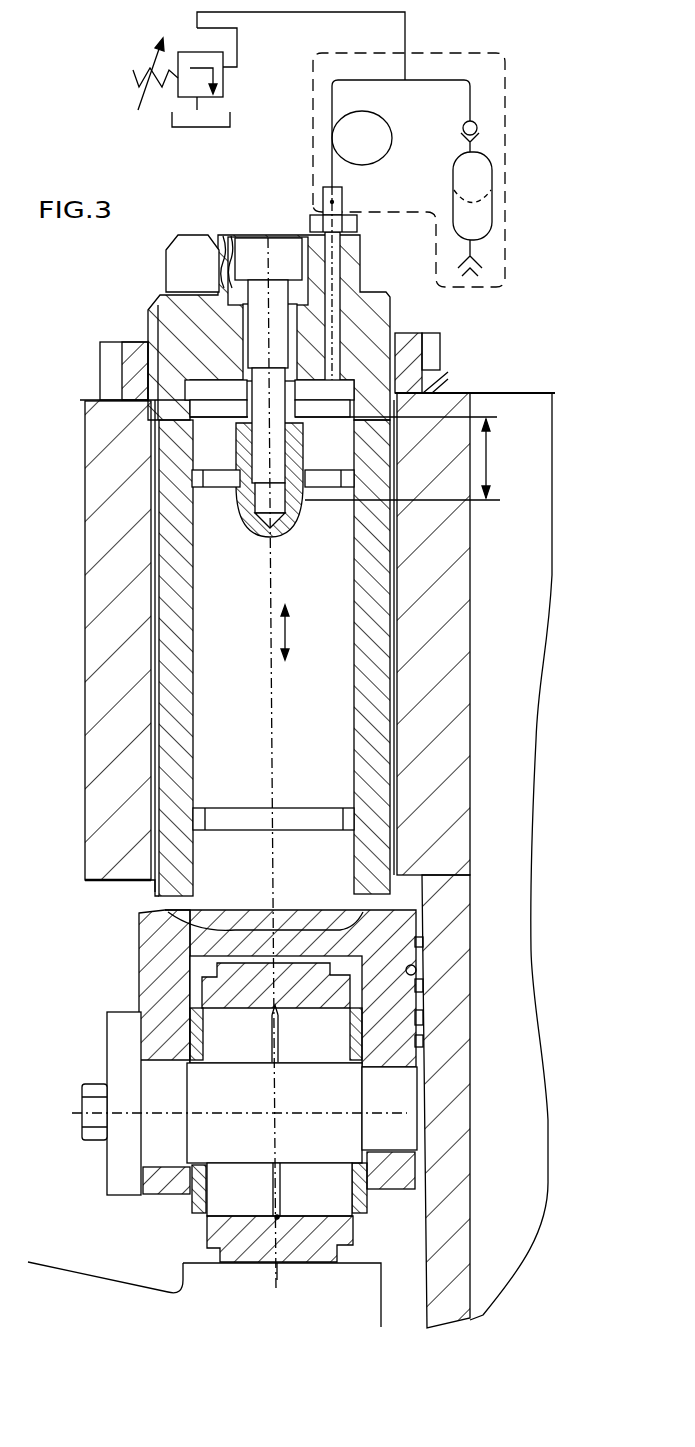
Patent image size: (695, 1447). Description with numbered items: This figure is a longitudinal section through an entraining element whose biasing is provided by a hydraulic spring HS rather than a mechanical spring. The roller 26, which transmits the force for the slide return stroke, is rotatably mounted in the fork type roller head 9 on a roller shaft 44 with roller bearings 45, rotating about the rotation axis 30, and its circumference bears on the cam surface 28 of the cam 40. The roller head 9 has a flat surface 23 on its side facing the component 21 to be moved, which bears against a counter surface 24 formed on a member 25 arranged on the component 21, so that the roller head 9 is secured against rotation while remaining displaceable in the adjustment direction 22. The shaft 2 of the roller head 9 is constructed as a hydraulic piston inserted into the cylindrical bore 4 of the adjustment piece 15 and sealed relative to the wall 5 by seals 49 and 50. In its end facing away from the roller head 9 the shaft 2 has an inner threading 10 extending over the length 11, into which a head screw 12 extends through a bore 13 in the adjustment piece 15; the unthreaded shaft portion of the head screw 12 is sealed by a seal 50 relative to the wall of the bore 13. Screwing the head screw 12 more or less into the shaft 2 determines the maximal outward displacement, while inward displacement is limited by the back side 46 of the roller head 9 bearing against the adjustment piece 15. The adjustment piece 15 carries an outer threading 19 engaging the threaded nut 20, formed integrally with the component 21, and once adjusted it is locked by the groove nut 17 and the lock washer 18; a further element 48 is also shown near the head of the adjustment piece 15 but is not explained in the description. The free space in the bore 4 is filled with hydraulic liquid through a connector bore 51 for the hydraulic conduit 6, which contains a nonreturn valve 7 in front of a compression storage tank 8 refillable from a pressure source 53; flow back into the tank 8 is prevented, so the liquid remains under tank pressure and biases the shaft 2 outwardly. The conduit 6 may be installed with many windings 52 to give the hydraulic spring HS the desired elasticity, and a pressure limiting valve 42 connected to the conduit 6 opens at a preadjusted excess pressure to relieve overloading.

The shaft 2 is at (200, 668).
The cylindrical bore 4 is at (185, 397).
The wall 5 is at (191, 613).
The hydraulic conduit 6 is at (332, 150).
The nonreturn valve 7 is at (473, 121).
The compression storage tank 8 is at (493, 180).
The roller head 9 is at (110, 988).
The inner threading 10 is at (256, 496).
The length 11 is at (490, 458).
The head screw 12 is at (148, 350).
The bore 13 is at (245, 317).
The adjustment piece 15 is at (172, 698).
The groove nut 17 is at (417, 346).
The lock washer 18 is at (444, 378).
The outer threading 19 is at (152, 893).
The threaded nut 20 is at (102, 532).
The component to be moved 21 is at (543, 530).
The adjustment direction 22 is at (287, 630).
The flat surface 23 is at (420, 937).
The counter surface 24 is at (420, 975).
The member 25 is at (424, 1008).
The roller 26 is at (212, 1235).
The cam surface 28 is at (190, 1262).
The rotation axis 30 is at (232, 1106).
The cam 40 is at (250, 1300).
The pressure limiting valve 42 is at (223, 87).
The roller shaft 44 is at (337, 1103).
The roller bearings 45 is at (338, 1210).
The back side 46 is at (145, 906).
The adjusting bolt 48 is at (199, 245).
The seal 49 is at (190, 477).
The seal 50 is at (226, 292).
The connector bore 51 is at (337, 270).
The windings 52 is at (376, 138).
The pressure source 53 is at (490, 267).
The hydraulic spring HS is at (481, 51).